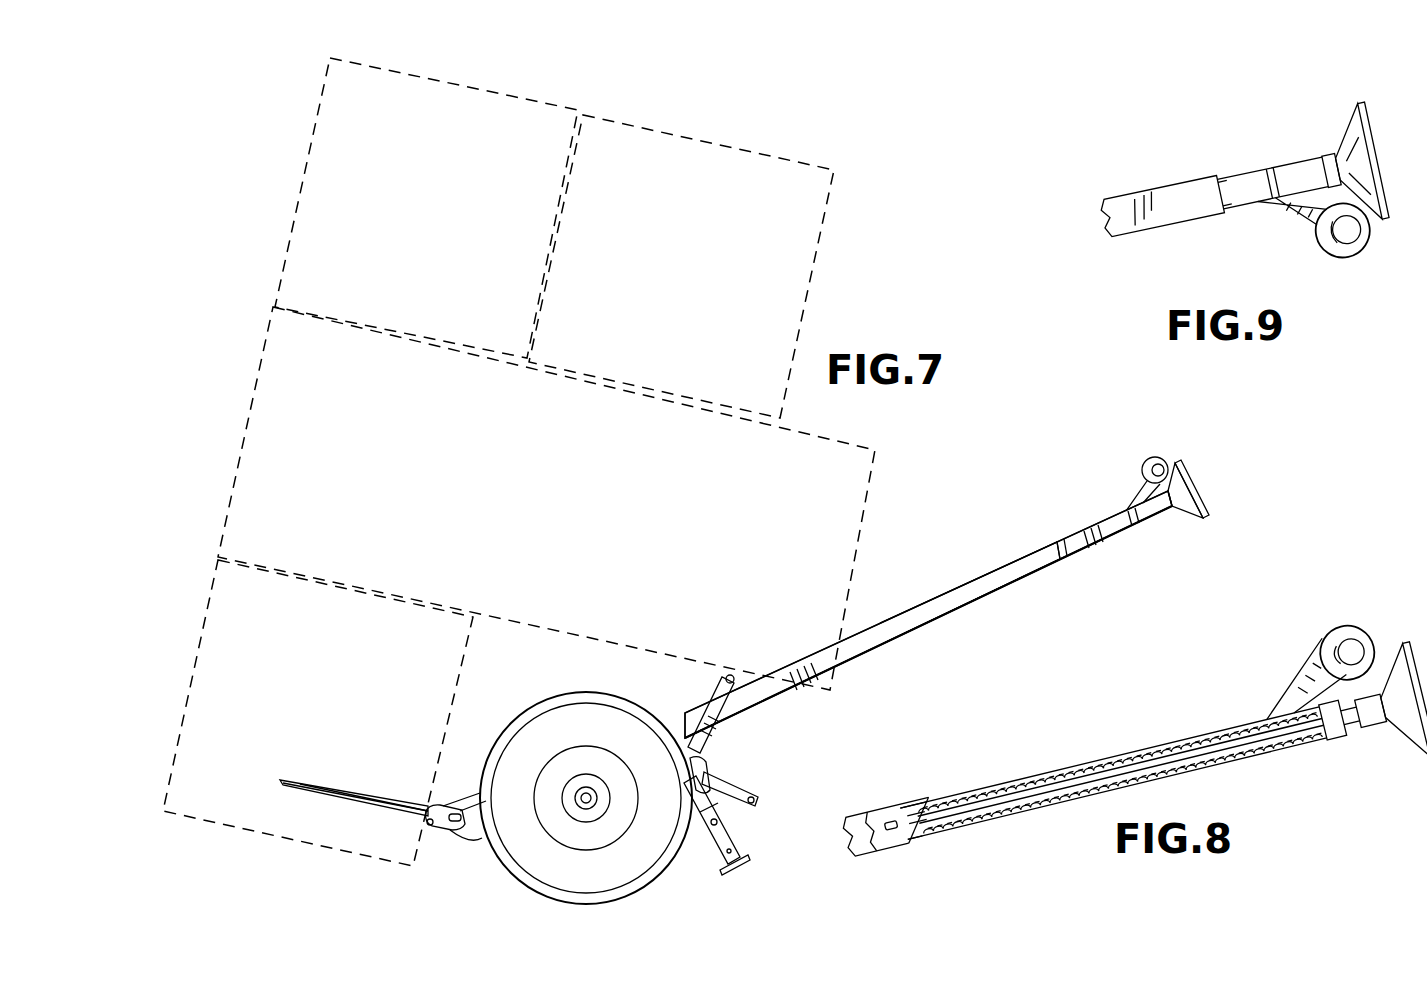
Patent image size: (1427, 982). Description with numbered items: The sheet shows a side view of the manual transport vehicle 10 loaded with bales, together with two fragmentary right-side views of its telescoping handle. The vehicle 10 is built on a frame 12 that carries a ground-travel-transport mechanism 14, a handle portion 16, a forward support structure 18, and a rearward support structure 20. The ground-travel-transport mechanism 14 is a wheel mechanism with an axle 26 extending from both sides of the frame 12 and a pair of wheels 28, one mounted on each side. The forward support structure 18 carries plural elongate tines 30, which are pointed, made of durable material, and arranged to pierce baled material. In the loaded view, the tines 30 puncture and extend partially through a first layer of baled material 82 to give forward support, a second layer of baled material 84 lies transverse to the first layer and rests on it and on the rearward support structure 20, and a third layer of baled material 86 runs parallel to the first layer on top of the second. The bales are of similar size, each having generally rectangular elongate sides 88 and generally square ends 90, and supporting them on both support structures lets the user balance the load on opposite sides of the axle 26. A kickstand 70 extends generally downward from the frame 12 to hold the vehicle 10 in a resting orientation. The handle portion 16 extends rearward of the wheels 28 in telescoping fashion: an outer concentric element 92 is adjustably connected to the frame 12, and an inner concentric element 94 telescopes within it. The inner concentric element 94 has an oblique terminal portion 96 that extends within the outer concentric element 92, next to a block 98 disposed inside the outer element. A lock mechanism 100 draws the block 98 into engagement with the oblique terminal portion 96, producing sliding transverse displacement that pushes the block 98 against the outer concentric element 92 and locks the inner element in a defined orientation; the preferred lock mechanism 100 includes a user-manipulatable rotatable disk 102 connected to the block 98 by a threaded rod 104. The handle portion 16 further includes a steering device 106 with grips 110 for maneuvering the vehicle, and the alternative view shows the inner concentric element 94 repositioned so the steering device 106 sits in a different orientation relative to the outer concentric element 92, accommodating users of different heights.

In FIG. 7, the manual transport vehicle 10 is at (990, 551).
In FIG. 8, the manual transport vehicle 10 is at (1005, 790).
In FIG. 7, the frame 12 is at (446, 837).
In FIG. 7, the ground-travel-transport mechanism 14 is at (513, 712).
In FIG. 7, the handle portion 16 is at (1100, 545).
In FIG. 8, the handle portion 16 is at (905, 842).
In FIG. 9, the handle portion 16 is at (1160, 189).
In FIG. 7, the forward support structure 18 is at (302, 772).
In FIG. 7, the rearward support structure 20 is at (712, 692).
In FIG. 7, the axle 26 is at (590, 792).
In FIG. 7, the wheels 28 is at (612, 692).
In FIG. 7, the tines 30 is at (385, 800).
In FIG. 7, the kickstand 70 is at (704, 826).
In FIG. 7, the first layer of baled material 82 is at (188, 662).
In FIG. 7, the second layer of baled material 84 is at (238, 424).
In FIG. 7, the third layer of baled material 86 is at (293, 190).
In FIG. 7, the rectangular elongate sides 88 is at (525, 509).
In FIG. 7, the square ends 90 is at (400, 227).
In FIG. 7, the outer concentric element 92 is at (927, 636).
In FIG. 8, the outer concentric element 92 is at (1112, 754).
In FIG. 9, the outer concentric element 92 is at (1182, 228).
In FIG. 7, the inner concentric element 94 is at (1152, 523).
In FIG. 8, the inner concentric element 94 is at (1278, 754).
In FIG. 9, the inner concentric element 94 is at (1258, 172).
In FIG. 8, the oblique terminal portion 96 is at (922, 807).
In FIG. 8, the block 98 is at (892, 810).
In FIG. 8, the lock mechanism 100 is at (1369, 731).
In FIG. 9, the lock mechanism 100 is at (1316, 154).
In FIG. 7, the rotatable disk 102 is at (1207, 511).
In FIG. 8, the rotatable disk 102 is at (1412, 652).
In FIG. 9, the rotatable disk 102 is at (1378, 161).
In FIG. 7, the threaded rod 104 is at (1196, 479).
In FIG. 7, the steering device 106 is at (1143, 456).
In FIG. 8, the steering device 106 is at (1294, 682).
In FIG. 9, the steering device 106 is at (1284, 228).
In FIG. 8, the grips 110 is at (1340, 632).
In FIG. 9, the grips 110 is at (1330, 261).